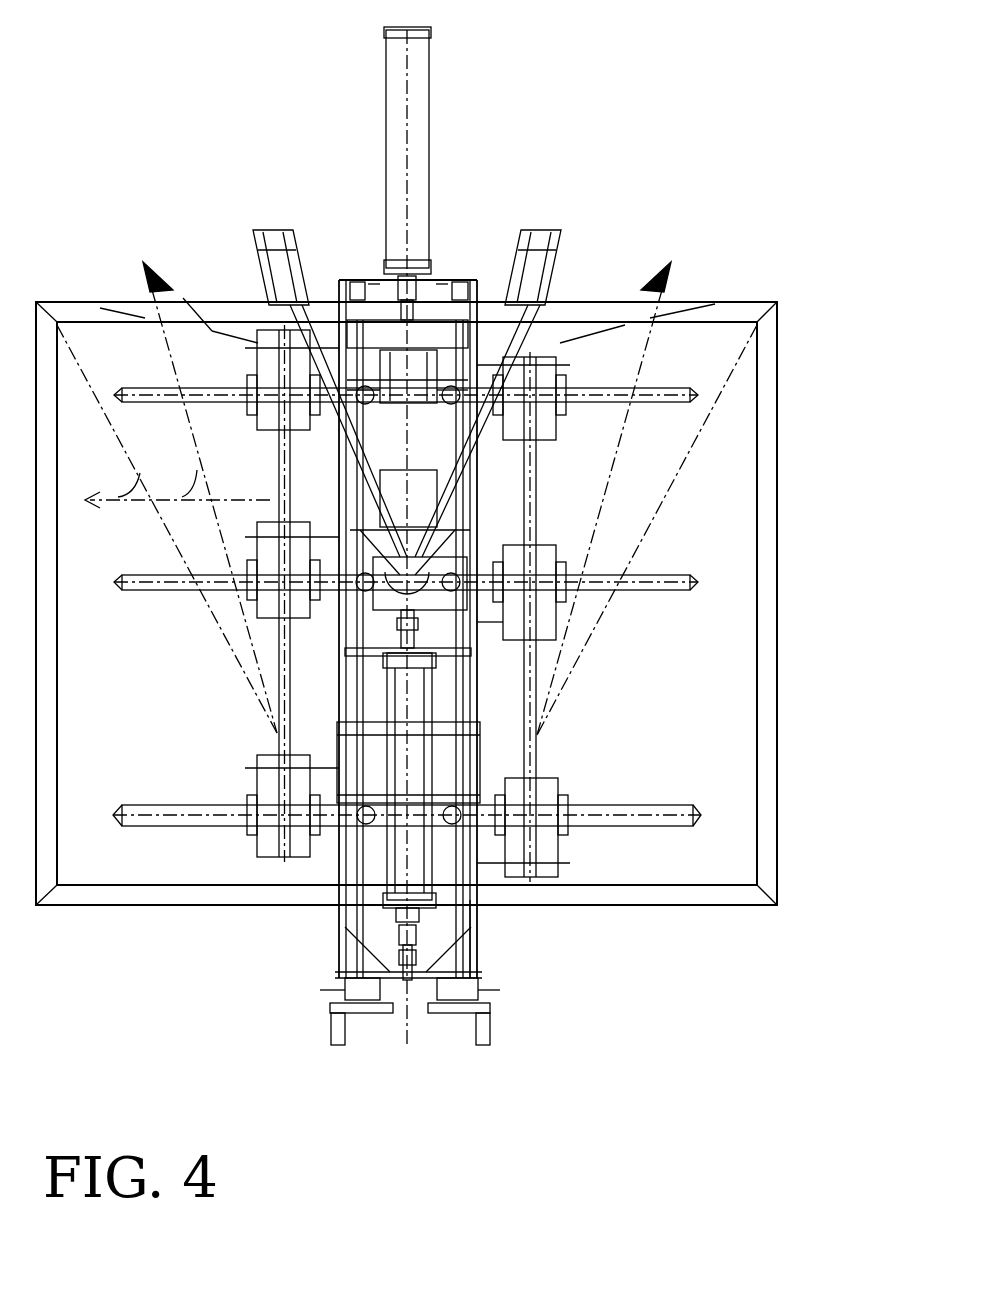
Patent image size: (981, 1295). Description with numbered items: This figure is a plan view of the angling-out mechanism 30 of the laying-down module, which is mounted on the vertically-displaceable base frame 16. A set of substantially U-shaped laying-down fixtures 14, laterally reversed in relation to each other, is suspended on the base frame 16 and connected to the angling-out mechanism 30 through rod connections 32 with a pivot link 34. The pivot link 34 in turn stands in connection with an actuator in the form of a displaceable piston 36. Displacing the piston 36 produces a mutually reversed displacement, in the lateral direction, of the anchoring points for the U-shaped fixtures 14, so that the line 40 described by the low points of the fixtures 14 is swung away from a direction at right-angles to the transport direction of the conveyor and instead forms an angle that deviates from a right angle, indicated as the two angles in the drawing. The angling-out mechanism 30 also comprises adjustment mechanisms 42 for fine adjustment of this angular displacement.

The laying-down fixtures 14 is at (693, 397).
The base frame 16 is at (765, 490).
The angling-out mechanism 30 is at (290, 553).
The rod connections 32 is at (440, 462).
The pivot link 34 is at (410, 424).
The displaceable piston 36 is at (563, 810).
The line 40 is at (93, 440).
The adjustment mechanisms 42 is at (560, 958).